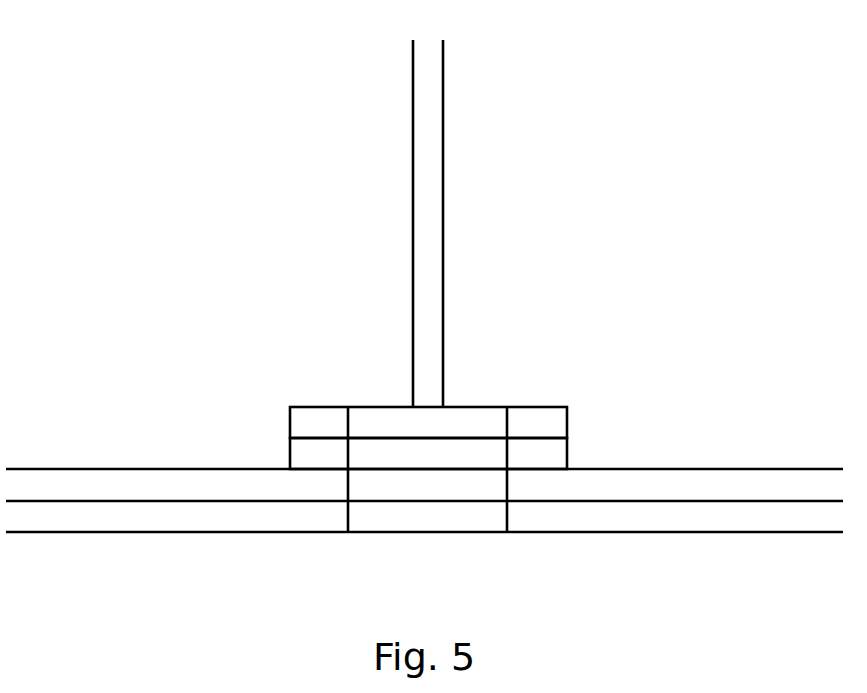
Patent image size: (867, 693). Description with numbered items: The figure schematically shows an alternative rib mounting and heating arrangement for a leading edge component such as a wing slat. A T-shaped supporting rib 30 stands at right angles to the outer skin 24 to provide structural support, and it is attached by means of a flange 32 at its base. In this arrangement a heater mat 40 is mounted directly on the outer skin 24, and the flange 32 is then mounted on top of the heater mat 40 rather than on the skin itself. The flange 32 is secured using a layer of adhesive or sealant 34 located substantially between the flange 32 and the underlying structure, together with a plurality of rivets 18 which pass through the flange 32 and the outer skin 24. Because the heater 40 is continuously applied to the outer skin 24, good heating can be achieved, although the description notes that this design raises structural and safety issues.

The rivets 18 is at (348, 407).
The outer skin 24 is at (97, 515).
The supporting rib 30 is at (443, 110).
The flange 32 is at (543, 428).
The adhesive or sealant 34 is at (307, 456).
The heater mat 40 is at (778, 487).